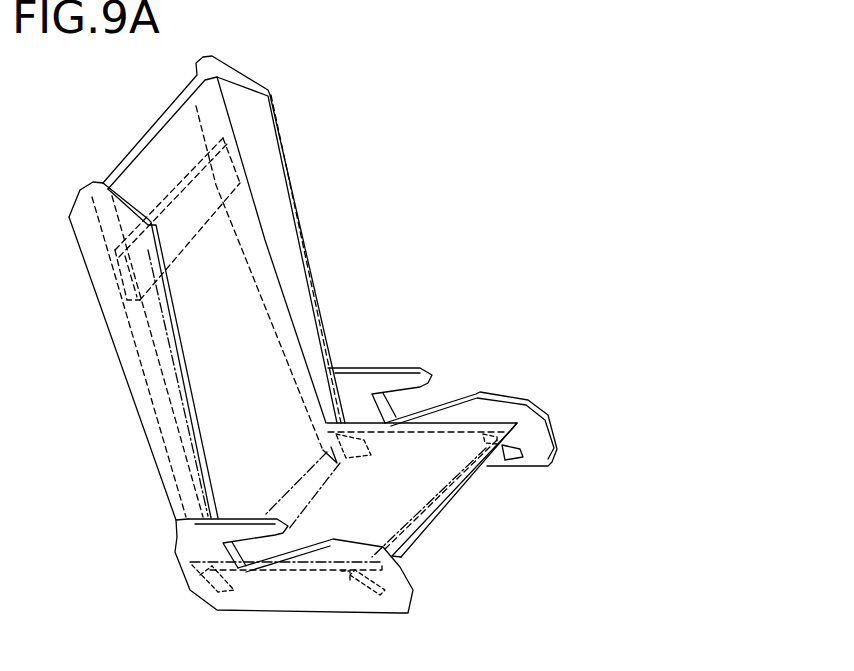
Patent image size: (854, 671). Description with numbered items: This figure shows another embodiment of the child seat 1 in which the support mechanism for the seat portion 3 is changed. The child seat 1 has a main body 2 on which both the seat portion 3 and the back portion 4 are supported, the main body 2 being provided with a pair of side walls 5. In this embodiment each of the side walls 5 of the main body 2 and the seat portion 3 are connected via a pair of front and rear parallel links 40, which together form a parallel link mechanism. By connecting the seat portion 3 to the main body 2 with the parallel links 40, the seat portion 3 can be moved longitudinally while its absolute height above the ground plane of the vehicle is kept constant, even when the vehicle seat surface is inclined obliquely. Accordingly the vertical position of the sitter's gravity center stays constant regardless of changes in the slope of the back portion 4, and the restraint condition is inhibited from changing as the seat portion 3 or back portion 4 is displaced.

The child seat 1 is at (471, 95).
The main body 2 is at (288, 146).
The seat portion 3 is at (458, 442).
The back portion 4 is at (168, 147).
The side walls 5 is at (128, 353).
The parallel links 40 is at (353, 440).